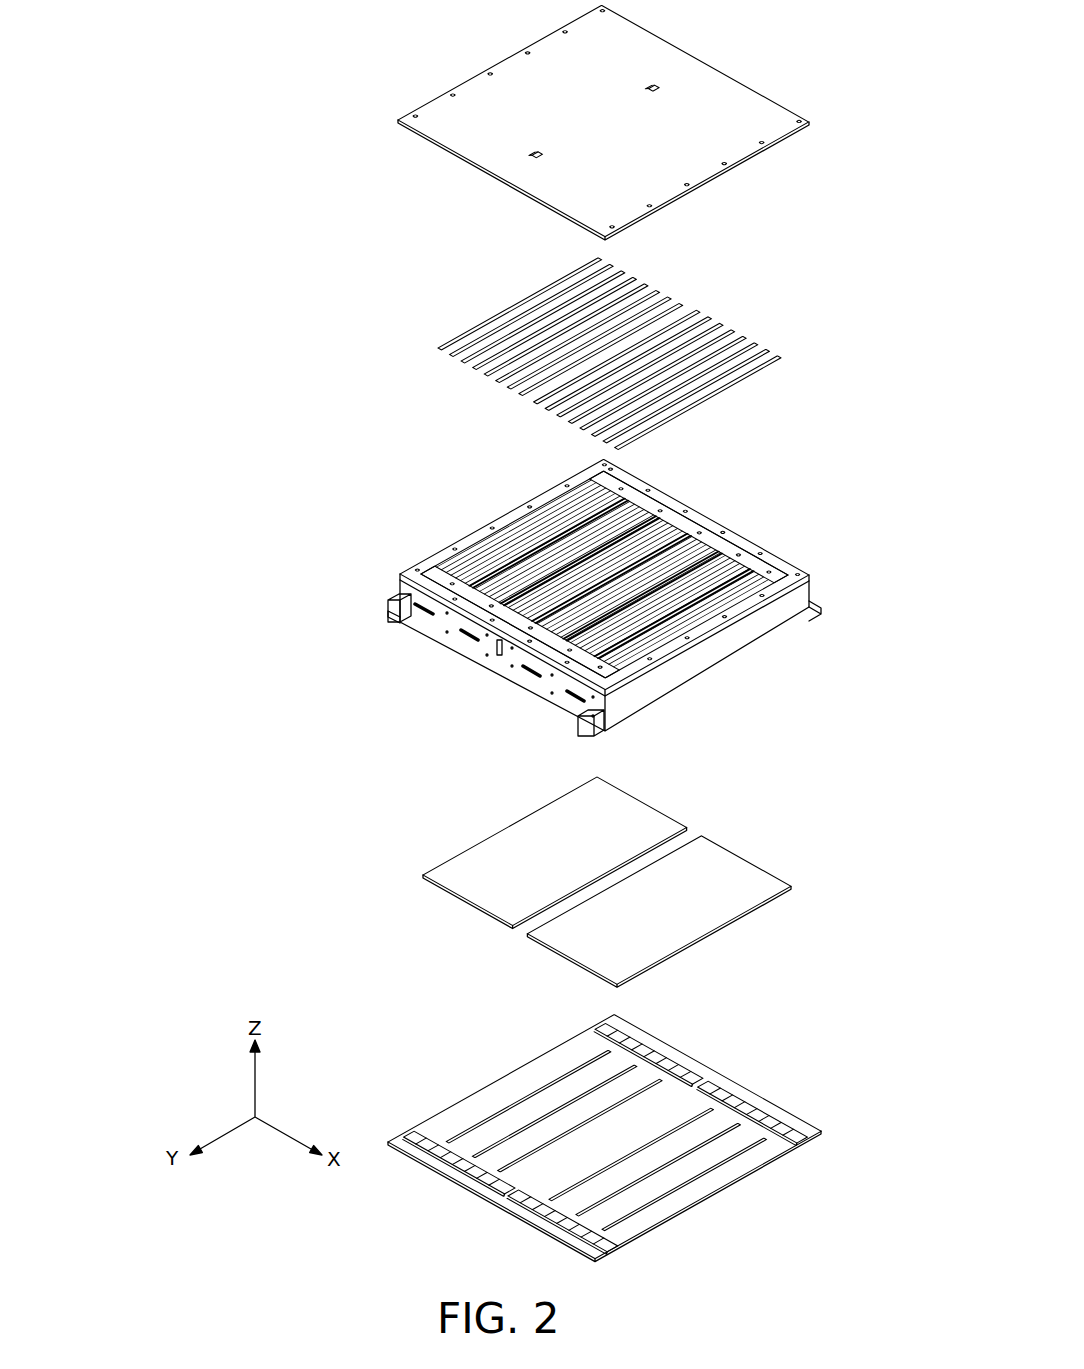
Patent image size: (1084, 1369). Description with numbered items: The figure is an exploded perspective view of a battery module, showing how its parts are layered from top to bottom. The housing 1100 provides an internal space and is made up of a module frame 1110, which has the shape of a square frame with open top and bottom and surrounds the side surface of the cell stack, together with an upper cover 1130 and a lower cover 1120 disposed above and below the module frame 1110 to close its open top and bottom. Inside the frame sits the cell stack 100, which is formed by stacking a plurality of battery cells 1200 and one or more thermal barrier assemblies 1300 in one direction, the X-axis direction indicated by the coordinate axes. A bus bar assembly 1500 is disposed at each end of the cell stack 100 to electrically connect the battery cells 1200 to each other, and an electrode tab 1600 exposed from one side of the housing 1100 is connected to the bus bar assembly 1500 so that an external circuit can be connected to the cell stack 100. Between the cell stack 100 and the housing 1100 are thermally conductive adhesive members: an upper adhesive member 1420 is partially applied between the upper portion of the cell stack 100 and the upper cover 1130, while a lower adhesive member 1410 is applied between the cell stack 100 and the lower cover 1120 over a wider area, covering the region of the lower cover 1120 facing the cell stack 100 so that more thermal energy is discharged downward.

The cell stack 100 is at (228, 632).
The housing 1100 is at (228, 460).
The module frame 1110 is at (748, 641).
The lower cover 1120 is at (728, 1177).
The upper cover 1130 is at (764, 108).
The battery cells 1200 is at (724, 582).
The thermal barrier assemblies 1300 is at (712, 566).
The lower adhesive member 1410 is at (707, 855).
The upper adhesive member 1420 is at (724, 308).
The bus bar assembly 1500 is at (426, 578).
The electrode tab 1600 is at (391, 610).